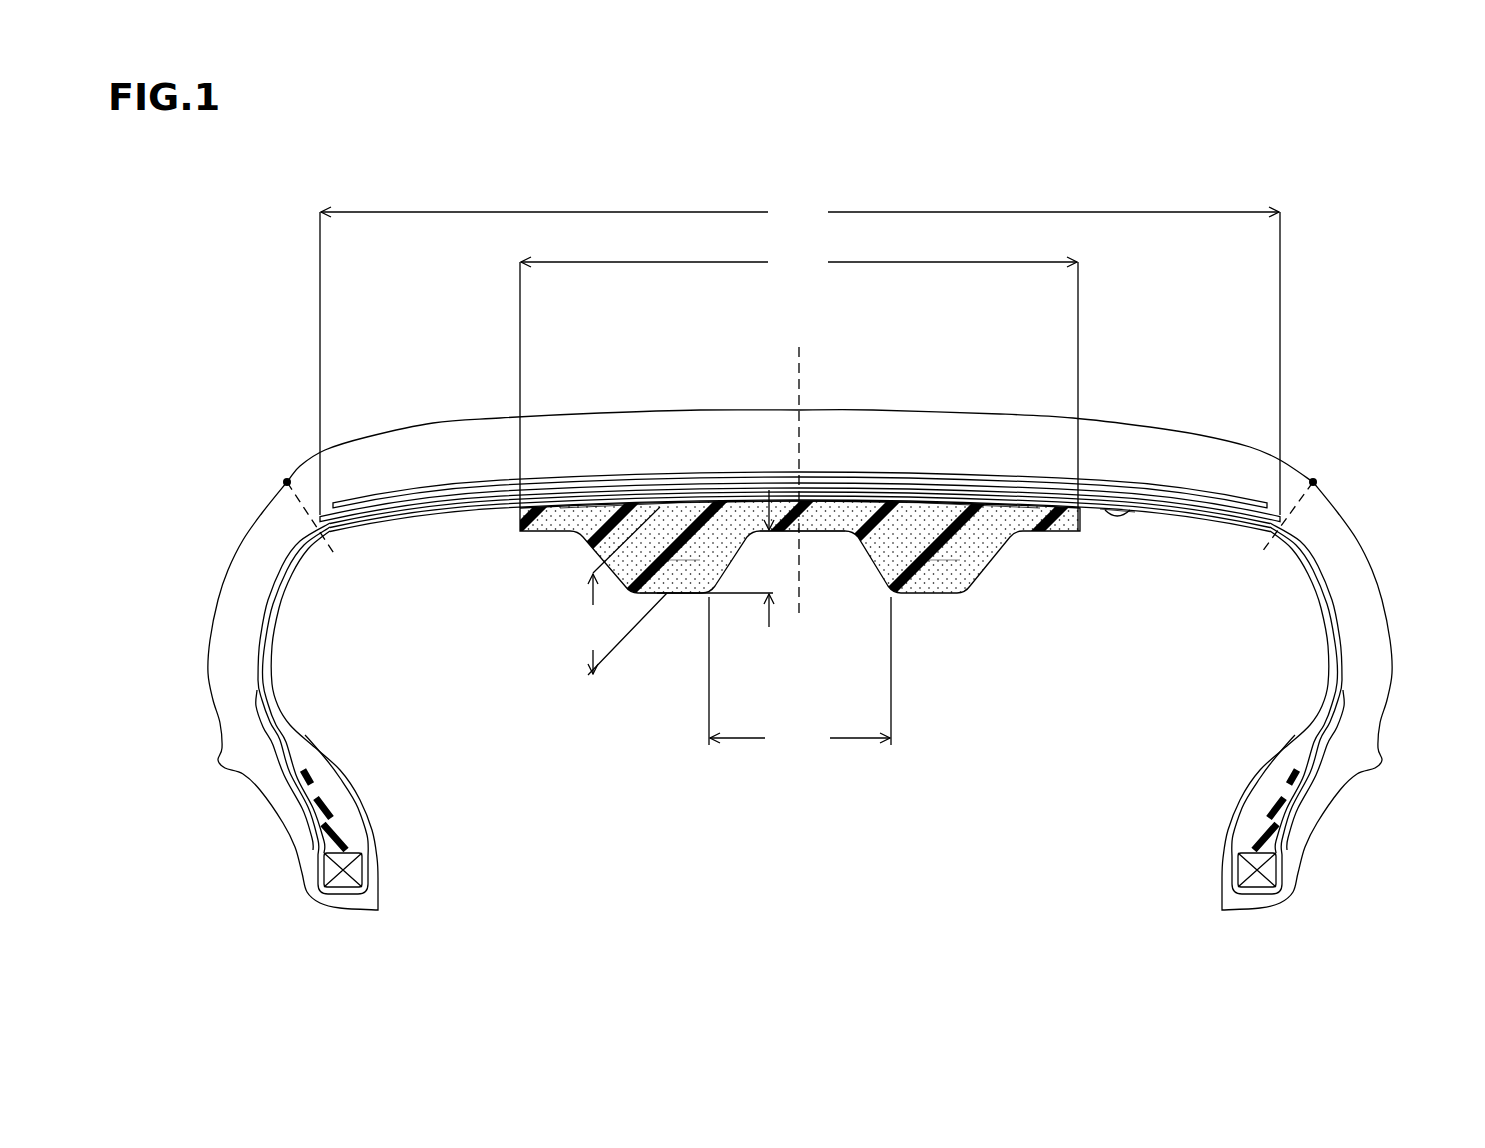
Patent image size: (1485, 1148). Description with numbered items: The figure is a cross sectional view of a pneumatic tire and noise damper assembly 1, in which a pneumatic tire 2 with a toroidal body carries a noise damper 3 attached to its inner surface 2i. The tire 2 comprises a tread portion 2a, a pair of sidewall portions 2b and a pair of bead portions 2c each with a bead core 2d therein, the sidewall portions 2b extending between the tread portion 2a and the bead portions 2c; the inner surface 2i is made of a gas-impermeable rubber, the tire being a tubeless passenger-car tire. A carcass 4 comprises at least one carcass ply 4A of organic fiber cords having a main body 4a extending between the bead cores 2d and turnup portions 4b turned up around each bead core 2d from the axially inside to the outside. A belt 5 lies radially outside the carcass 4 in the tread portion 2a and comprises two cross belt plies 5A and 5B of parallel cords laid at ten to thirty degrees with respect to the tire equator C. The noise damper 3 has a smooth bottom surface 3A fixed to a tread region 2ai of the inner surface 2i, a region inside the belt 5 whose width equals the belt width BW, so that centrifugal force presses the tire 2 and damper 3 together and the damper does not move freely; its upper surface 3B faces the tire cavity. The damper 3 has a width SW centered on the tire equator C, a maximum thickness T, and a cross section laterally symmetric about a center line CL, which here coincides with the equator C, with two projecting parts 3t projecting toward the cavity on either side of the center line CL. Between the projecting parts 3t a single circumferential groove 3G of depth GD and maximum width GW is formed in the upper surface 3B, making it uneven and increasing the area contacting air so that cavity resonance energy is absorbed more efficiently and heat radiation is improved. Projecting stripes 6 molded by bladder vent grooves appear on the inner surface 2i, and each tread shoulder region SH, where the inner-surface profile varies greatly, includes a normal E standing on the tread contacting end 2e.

The pneumatic tire and noise damper assembly 1 is at (1312, 380).
The pneumatic tire 2 is at (1347, 500).
The tread portion 2a is at (889, 402).
The tread region 2ai is at (1143, 513).
The sidewall portion 2b is at (204, 657).
The bead portion 2c is at (290, 852).
The bead core 2d is at (358, 880).
The tread contacting end 2e is at (285, 476).
The inner surface 2i is at (1183, 524).
The noise damper 3 is at (929, 600).
The bottom surface 3A is at (624, 500).
The upper surface 3B is at (670, 600).
The groove 3G is at (823, 540).
The projecting part 3t is at (703, 572).
The carcass 4 is at (1222, 625).
The carcass ply 4A is at (800, 693).
The main body 4a is at (1343, 637).
The turnup portion 4b is at (1337, 707).
The belt 5 is at (423, 605).
The cross belt ply 5A is at (443, 500).
The cross belt ply 5B is at (490, 480).
The projecting stripe 6 is at (288, 704).
The tread shoulder region SH is at (282, 481).
The normal E is at (800, 535).
The width of the belt BW is at (800, 356).
The width of the noise damper SW is at (799, 389).
The tire equator C is at (798, 464).
The center line CL is at (798, 464).
The depth of the groove GD is at (724, 558).
The maximum width of the groove GW is at (800, 675).
The maximum thickness of the noise damper T is at (625, 591).